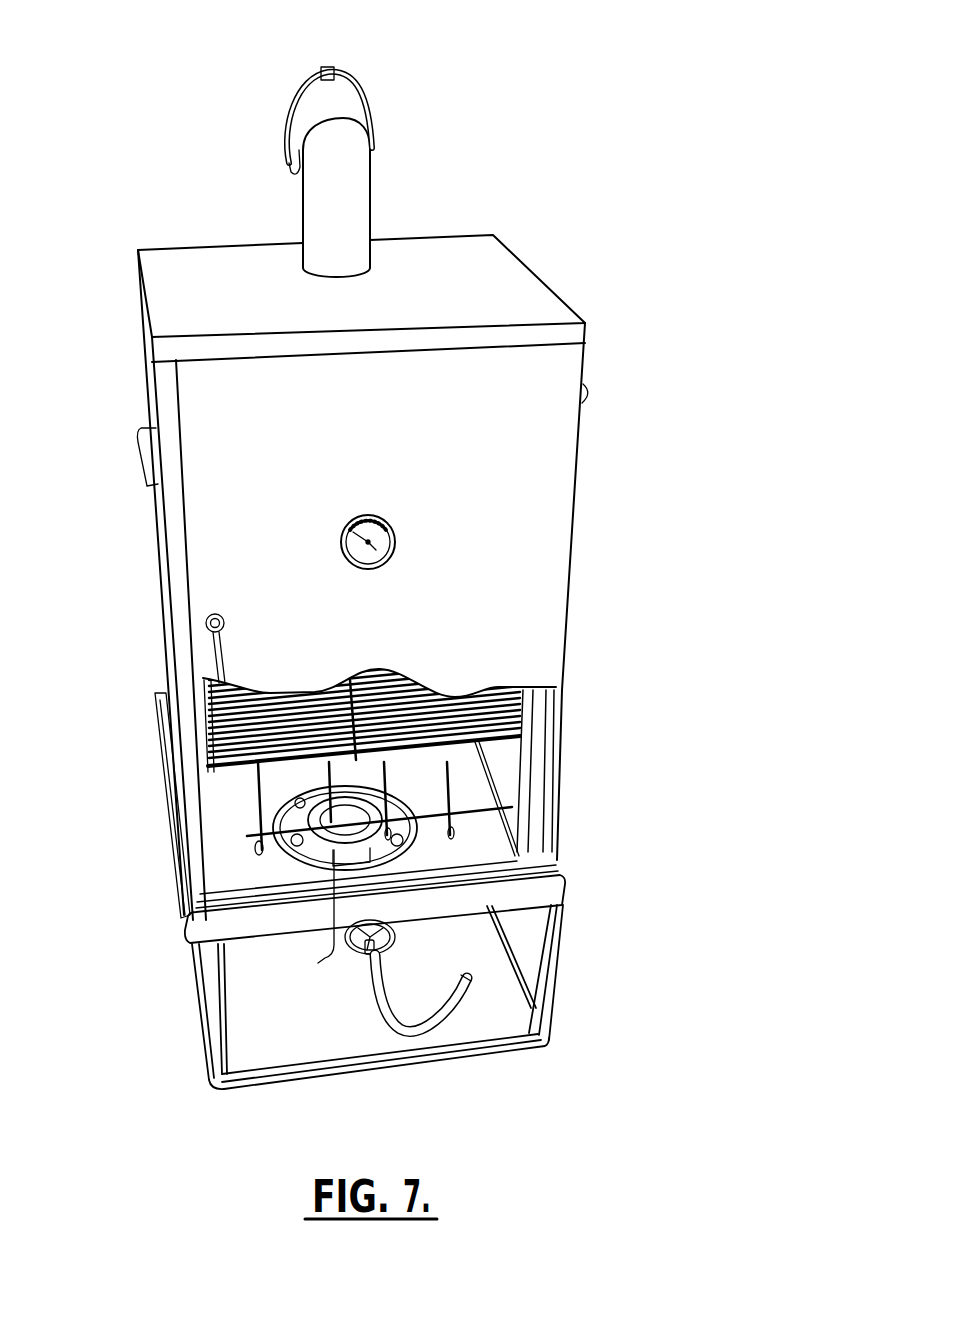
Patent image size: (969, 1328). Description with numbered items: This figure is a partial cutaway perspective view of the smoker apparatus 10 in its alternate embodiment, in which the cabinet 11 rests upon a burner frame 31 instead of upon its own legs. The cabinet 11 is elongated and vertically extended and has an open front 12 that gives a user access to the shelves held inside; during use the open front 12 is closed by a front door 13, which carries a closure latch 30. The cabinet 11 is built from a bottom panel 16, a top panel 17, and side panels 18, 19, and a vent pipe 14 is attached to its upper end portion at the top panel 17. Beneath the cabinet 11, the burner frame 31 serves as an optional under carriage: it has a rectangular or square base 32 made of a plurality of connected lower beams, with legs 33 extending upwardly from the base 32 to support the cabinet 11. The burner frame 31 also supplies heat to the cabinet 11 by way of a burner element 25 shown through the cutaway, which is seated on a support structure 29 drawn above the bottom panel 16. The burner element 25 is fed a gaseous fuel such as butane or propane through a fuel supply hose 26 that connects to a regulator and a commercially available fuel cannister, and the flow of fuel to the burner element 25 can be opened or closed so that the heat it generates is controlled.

The smoker apparatus 10 is at (500, 96).
The cabinet 11 is at (572, 490).
The open front 12 is at (228, 799).
The front door 13 is at (277, 546).
The vent pipe 14 is at (360, 193).
The bottom panel 16 is at (247, 886).
The top panel 17 is at (520, 288).
The side panel 18 is at (167, 558).
The side panel 19 is at (567, 590).
The burner element 25 is at (328, 955).
The fuel supply hose 26 is at (388, 1016).
The burner support frame 29 is at (418, 815).
The closure latch 30 is at (227, 646).
The burner frame 31 is at (567, 888).
The base 32 is at (503, 938).
The legs 33 is at (212, 1003).